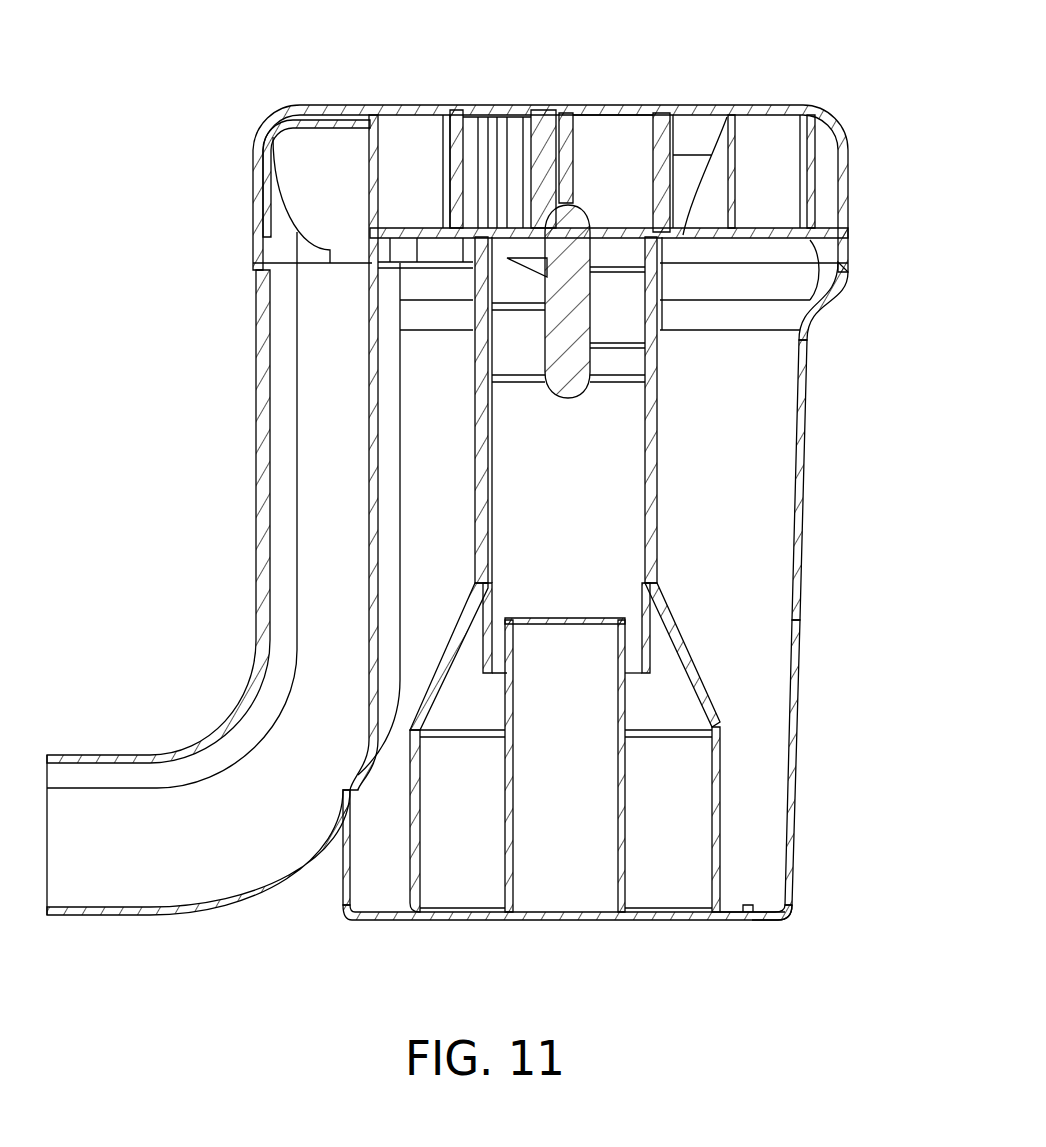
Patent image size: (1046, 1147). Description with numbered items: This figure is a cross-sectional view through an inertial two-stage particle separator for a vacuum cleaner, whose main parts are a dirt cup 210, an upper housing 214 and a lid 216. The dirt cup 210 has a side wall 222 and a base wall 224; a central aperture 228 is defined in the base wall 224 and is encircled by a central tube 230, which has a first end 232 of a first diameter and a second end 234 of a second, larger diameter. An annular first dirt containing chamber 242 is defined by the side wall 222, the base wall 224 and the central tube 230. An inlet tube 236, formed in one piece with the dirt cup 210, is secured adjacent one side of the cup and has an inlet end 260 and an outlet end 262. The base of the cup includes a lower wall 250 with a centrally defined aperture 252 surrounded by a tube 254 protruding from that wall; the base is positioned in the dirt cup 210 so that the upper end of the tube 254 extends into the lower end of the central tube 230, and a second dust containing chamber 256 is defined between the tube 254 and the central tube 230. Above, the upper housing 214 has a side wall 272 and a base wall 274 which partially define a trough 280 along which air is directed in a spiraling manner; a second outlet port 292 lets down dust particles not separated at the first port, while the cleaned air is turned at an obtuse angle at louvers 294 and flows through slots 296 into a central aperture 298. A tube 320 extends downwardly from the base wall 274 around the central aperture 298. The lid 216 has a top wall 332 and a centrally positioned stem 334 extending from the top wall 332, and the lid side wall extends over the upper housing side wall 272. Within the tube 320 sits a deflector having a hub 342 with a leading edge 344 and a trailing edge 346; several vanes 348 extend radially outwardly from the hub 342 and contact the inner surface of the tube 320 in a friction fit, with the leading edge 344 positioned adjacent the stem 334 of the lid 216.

The dirt cup 210 is at (806, 400).
The upper housing 214 is at (297, 193).
The lid 216 is at (308, 100).
The side wall 222 is at (793, 680).
The base wall 224 is at (763, 913).
The central aperture 228 is at (418, 833).
The central tube 230 is at (655, 506).
The first end 232 is at (656, 292).
The second end 234 is at (718, 810).
The inlet tube 236 is at (283, 713).
The first dirt containing chamber 242 is at (777, 807).
The lower wall 250 is at (657, 913).
The aperture 252 is at (562, 905).
The tube 254 is at (618, 780).
The second dust containing chamber 256 is at (470, 877).
The inlet end 260 is at (68, 817).
The outlet end 262 is at (328, 288).
The side wall 272 is at (832, 162).
The base wall 274 is at (812, 280).
The trough 280 is at (382, 140).
The second outlet port 292 is at (706, 133).
The louvers 294 is at (467, 130).
The slots 296 is at (507, 133).
The central aperture 298 is at (635, 143).
The tube 320 is at (848, 145).
The top wall 332 is at (614, 110).
The stem 334 is at (576, 130).
The hub 342 is at (660, 310).
The leading edge 344 is at (538, 190).
The trailing edge 346 is at (566, 387).
The vanes 348 is at (520, 335).